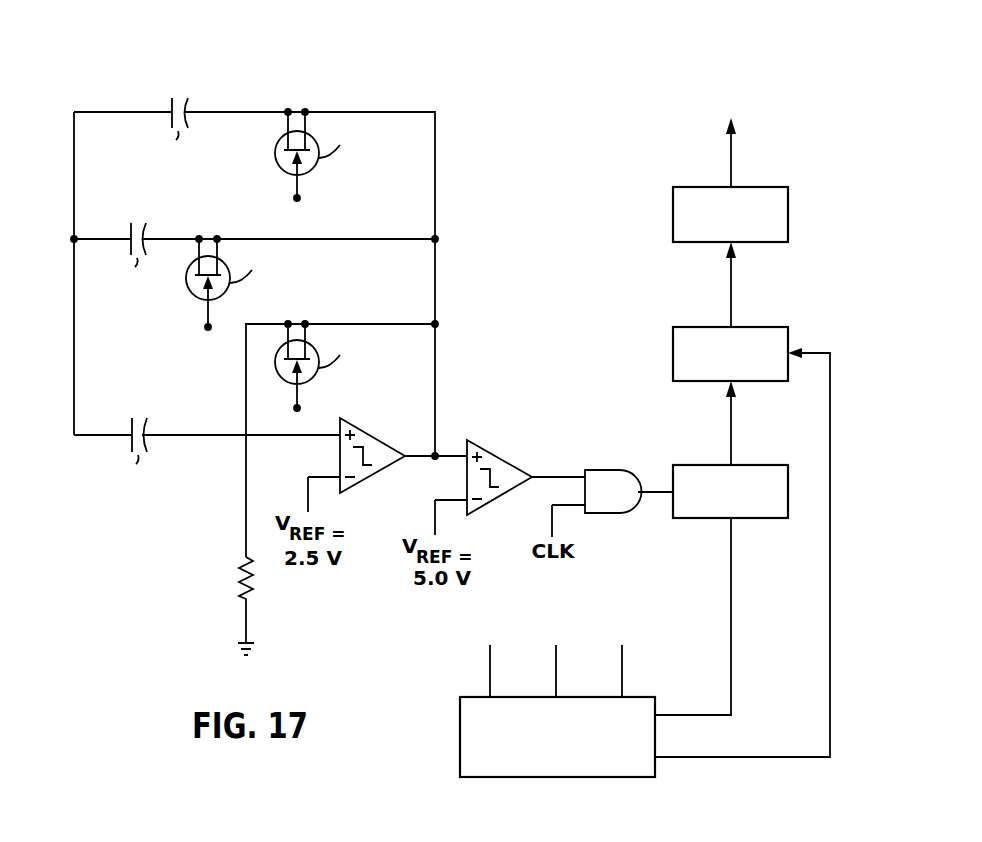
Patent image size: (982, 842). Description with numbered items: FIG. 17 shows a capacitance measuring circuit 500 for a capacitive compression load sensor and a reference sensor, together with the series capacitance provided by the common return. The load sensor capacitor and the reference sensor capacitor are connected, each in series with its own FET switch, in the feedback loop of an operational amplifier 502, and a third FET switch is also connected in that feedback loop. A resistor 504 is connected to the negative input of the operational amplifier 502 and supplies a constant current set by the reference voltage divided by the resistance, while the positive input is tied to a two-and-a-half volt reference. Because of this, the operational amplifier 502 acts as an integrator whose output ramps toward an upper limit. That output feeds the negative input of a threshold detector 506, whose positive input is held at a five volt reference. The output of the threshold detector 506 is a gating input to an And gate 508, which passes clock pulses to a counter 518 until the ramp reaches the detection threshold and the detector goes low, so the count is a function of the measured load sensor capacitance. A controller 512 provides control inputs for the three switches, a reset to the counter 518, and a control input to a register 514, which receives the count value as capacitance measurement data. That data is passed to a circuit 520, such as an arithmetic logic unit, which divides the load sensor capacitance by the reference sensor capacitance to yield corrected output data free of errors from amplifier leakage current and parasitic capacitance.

The circuit 500 is at (495, 272).
The operational amplifier 502 is at (355, 432).
The resistor 504 is at (253, 578).
The threshold detector 506 is at (485, 460).
The And gate 508 is at (600, 470).
The controller 512 is at (460, 745).
The register 514 is at (760, 327).
The counter 518 is at (748, 518).
The circuit (arithmetic logic unit) 520 is at (763, 187).